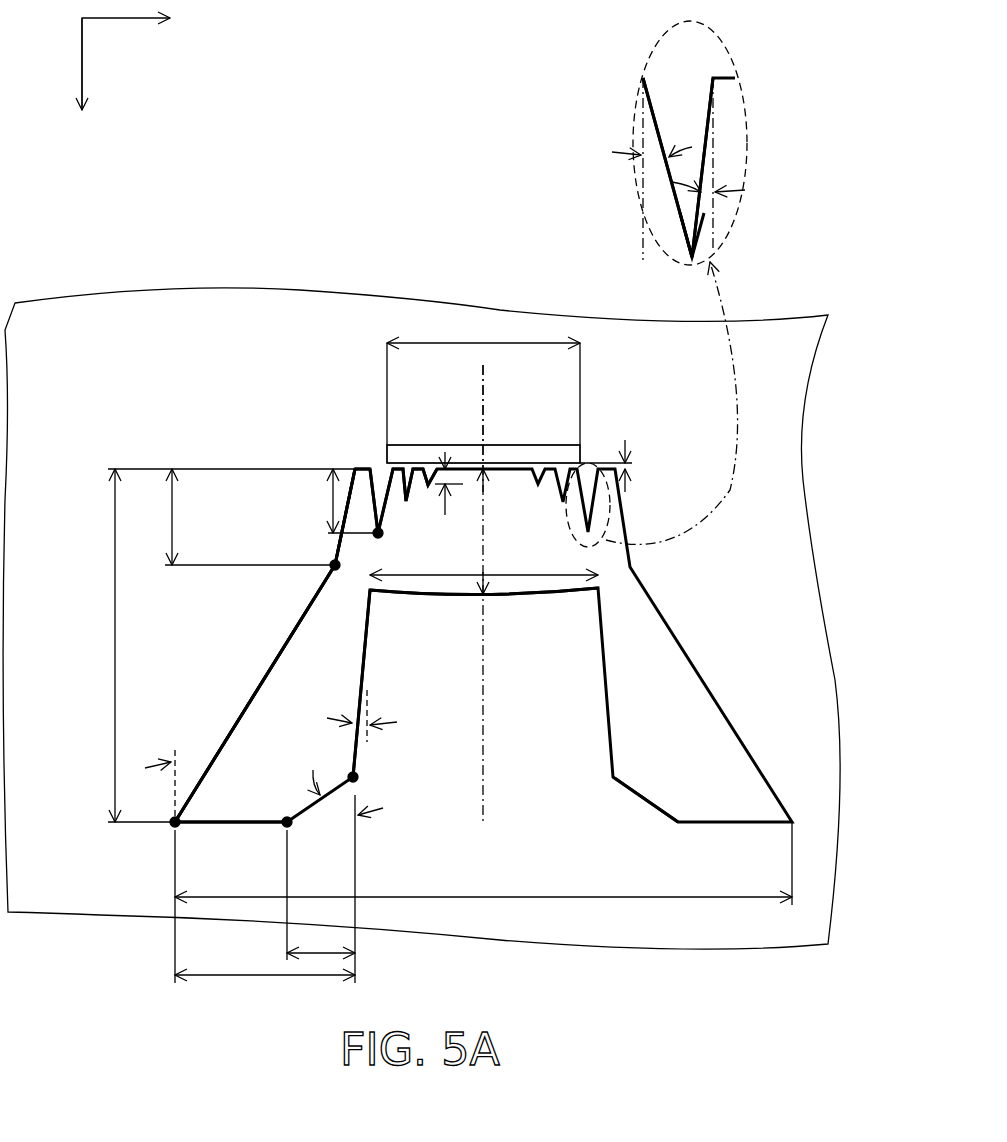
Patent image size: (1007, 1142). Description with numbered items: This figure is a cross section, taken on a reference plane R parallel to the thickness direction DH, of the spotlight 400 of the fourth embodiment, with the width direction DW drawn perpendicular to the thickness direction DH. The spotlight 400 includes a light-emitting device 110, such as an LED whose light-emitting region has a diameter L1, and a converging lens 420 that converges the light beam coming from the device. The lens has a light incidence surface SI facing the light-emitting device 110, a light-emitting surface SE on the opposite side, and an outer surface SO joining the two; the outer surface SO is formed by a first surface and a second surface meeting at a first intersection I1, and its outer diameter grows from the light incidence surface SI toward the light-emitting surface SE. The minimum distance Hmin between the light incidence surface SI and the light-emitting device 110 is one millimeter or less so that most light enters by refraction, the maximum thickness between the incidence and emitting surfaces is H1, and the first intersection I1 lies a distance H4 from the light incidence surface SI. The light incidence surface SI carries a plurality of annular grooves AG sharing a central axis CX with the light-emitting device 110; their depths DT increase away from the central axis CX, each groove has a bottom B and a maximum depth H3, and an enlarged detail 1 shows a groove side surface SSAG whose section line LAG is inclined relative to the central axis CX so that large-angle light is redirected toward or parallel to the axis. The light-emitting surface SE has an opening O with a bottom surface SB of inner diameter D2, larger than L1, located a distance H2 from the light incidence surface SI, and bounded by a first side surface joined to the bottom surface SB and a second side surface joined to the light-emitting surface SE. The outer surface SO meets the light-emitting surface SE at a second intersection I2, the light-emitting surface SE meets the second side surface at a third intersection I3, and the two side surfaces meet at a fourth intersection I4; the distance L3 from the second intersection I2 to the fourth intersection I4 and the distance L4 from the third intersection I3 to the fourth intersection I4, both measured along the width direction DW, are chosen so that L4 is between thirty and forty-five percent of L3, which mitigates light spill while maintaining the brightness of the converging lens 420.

The air gap detail (enlarged) 1 is at (643, 78).
The reference plane R is at (165, 300).
The width direction DW is at (146, 57).
The thickness direction DH is at (86, 82).
The opening O is at (533, 803).
The spotlight 400 is at (575, 393).
The converging lens 420 is at (513, 478).
The light-emitting device 110 is at (562, 453).
The central axis CX is at (479, 413).
The diameter of the light-emitting region L1 is at (483, 378).
The light incidence surface SI is at (362, 466).
The annular groove AG is at (428, 467).
The depth of annular groove DT is at (450, 476).
The minimum distance Hmin is at (635, 464).
The bottom of the annular groove B is at (382, 537).
The maximum depth of the annular groove H3 is at (347, 501).
The maximum distance between first intersection and light incidence surface H4 is at (245, 517).
The maximum distance between light incidence surface and light-emitting surface H1 is at (227, 645).
The maximum distance between bottom surface and light incidence surface H2 is at (501, 531).
The inner diameter of the bottom surface D2 is at (557, 575).
The bottom surface SB is at (531, 595).
The first intersection I1 is at (347, 568).
The second intersection I2 is at (178, 826).
The third intersection I3 is at (290, 826).
The fourth intersection I4 is at (358, 778).
The outer surface SO is at (168, 582).
The light-emitting surface SE is at (227, 826).
The distance between second and fourth intersections L3 is at (265, 889).
The distance between third and fourth intersections L4 is at (321, 895).
The side surface of the annular groove SSAG is at (707, 127).
The section line of the side surface LAG is at (701, 233).